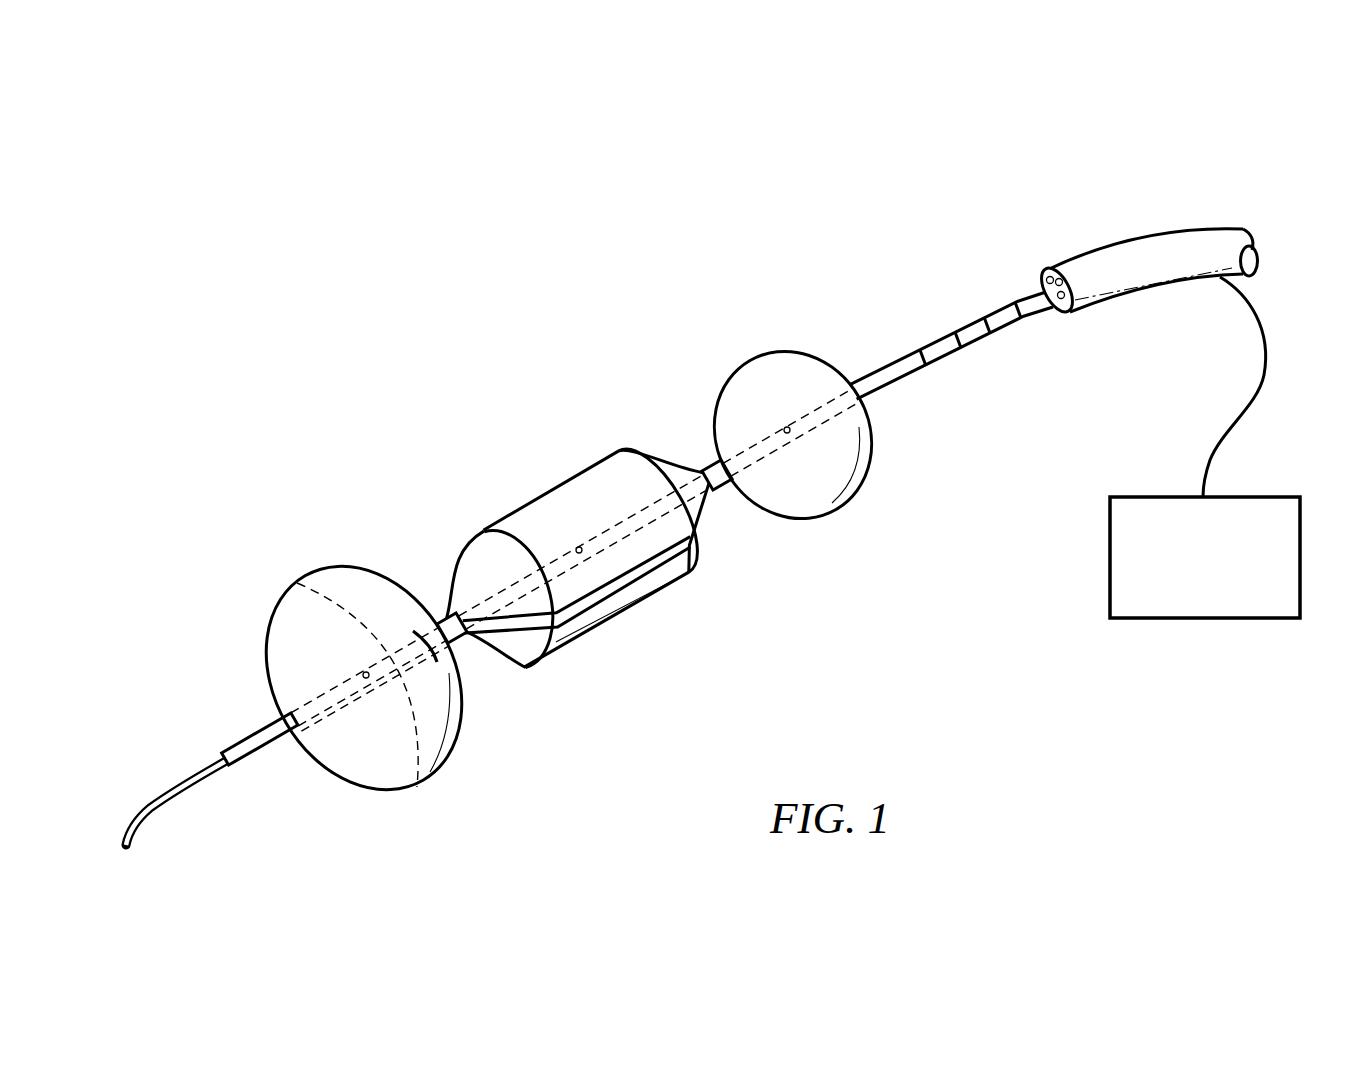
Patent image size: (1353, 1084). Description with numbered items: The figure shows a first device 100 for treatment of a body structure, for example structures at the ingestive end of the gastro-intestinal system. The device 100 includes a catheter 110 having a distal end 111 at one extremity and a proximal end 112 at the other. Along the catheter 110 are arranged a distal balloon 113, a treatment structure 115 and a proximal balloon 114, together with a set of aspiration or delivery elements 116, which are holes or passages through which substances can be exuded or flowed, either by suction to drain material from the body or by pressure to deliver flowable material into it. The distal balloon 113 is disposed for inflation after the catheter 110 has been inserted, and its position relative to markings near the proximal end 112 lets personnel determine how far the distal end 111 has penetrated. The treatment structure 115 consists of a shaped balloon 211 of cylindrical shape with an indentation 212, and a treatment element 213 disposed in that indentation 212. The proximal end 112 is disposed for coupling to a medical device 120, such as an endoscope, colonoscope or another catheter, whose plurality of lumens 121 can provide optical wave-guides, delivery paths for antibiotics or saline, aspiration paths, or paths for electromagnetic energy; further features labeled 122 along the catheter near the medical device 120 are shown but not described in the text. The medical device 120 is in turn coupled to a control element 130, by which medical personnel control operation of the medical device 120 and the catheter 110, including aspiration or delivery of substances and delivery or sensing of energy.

The device 100 is at (396, 355).
The catheter 110 is at (893, 282).
The distal end 111 is at (238, 750).
The proximal end 112 is at (872, 385).
The distal balloon 113 is at (388, 768).
The proximal balloon 114 is at (832, 520).
The treatment structure 115 is at (464, 491).
The aspiration or delivery elements 116 is at (363, 673).
The medical device 120 is at (1104, 204).
The lumens 121 is at (1045, 270).
The articulating segments 122 is at (1026, 336).
The control element 130 is at (1193, 618).
The shaped balloon 211 is at (625, 470).
The indentation 212 is at (537, 643).
The treatment element 213 is at (617, 587).